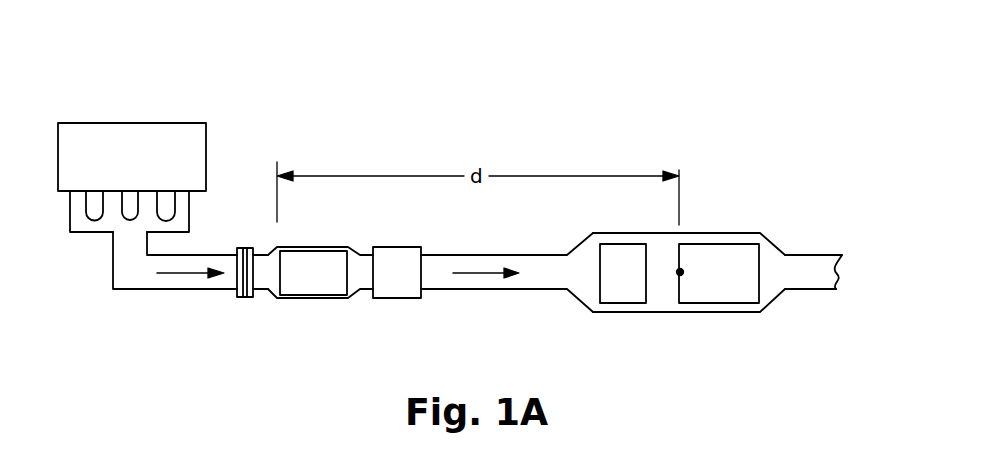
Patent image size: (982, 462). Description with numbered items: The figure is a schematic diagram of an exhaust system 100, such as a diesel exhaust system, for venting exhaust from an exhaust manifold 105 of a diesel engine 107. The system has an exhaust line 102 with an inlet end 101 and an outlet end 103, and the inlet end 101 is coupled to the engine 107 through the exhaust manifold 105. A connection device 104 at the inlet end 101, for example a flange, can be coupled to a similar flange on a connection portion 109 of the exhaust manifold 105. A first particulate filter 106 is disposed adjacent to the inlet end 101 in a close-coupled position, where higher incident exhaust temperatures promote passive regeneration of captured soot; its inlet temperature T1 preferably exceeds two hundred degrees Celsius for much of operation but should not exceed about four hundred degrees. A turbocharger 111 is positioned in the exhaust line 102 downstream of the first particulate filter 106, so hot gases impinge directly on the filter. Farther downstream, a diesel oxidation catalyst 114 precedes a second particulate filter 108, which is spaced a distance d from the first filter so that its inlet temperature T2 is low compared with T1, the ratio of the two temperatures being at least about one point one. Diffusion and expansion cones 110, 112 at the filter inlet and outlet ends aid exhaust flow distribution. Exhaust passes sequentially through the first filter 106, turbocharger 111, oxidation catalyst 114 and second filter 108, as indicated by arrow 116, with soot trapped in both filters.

The exhaust system 100 is at (484, 231).
The inlet end 101 is at (262, 277).
The exhaust line 102 is at (553, 235).
The outlet end 103 is at (795, 283).
The connection device 104 is at (245, 248).
The exhaust manifold 105 is at (140, 289).
The first particulate filter 106 is at (312, 258).
The diesel engine 107 is at (207, 138).
The second particulate filter 108 is at (707, 244).
The connection portion 109 is at (228, 277).
The diffusion and expansion cone 110 is at (357, 298).
The turbocharger 111 is at (381, 247).
The diffusion and expansion cone 112 is at (577, 300).
The diesel oxidation catalyst 114 is at (632, 244).
The arrow 116 is at (182, 289).
The inlet temperature of the first filter T1 is at (283, 270).
The inlet temperature of the second filter T2 is at (680, 272).